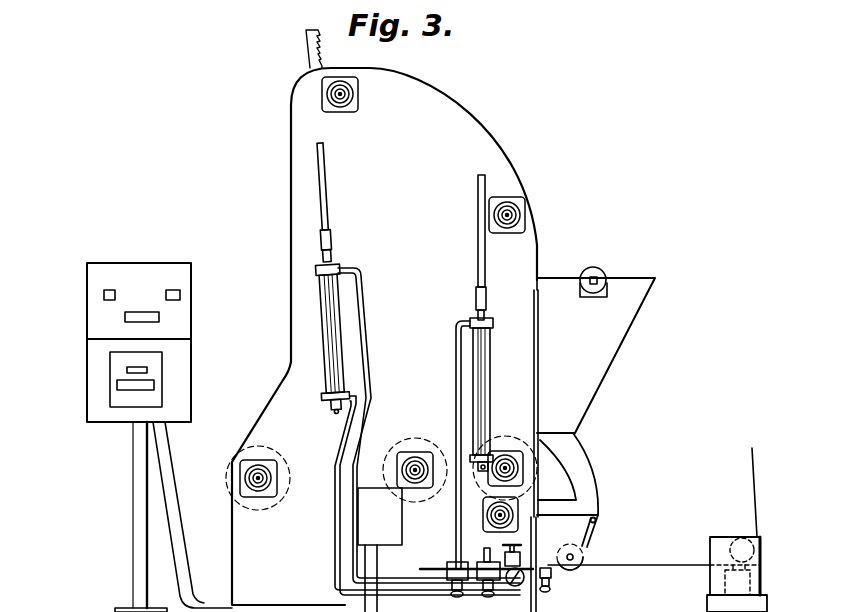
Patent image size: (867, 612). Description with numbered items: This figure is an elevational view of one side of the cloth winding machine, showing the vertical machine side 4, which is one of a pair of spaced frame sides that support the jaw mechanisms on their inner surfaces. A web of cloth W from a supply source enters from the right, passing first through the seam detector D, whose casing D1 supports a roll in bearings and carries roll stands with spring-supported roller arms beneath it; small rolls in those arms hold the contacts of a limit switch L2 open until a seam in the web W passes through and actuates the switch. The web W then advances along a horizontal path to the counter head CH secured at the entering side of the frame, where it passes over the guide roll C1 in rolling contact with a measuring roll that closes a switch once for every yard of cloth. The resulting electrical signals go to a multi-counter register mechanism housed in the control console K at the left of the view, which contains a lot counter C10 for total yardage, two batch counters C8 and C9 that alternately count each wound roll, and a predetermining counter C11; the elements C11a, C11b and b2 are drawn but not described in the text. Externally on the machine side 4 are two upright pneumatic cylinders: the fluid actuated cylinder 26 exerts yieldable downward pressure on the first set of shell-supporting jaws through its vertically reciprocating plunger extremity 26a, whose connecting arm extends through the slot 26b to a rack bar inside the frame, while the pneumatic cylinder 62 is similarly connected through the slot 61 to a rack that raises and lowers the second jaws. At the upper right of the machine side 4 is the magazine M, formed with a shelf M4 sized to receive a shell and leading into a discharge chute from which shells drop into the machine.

The machine side 4 is at (503, 171).
The slot 61 is at (325, 178).
The pneumatic cylinder 62 is at (331, 352).
The slot 26b is at (485, 259).
The plunger extremity 26a is at (488, 310).
The fluid actuated cylinder 26 is at (486, 372).
The magazine M is at (640, 268).
The shelf M4 is at (608, 274).
The counter head CH is at (606, 513).
The guide roll C1 is at (585, 558).
The control console K is at (177, 330).
The batch counter C8 is at (103, 295).
The batch counter C9 is at (180, 295).
The lot counter C10 is at (126, 319).
The predetermining counter C11 is at (122, 397).
The control element C11a is at (147, 385).
The control element C11b is at (143, 368).
The web of cloth W is at (755, 462).
The seam detector D is at (736, 543).
The casing D1 is at (762, 562).
The bearing b2 is at (728, 536).
The limit switch L2 is at (735, 569).